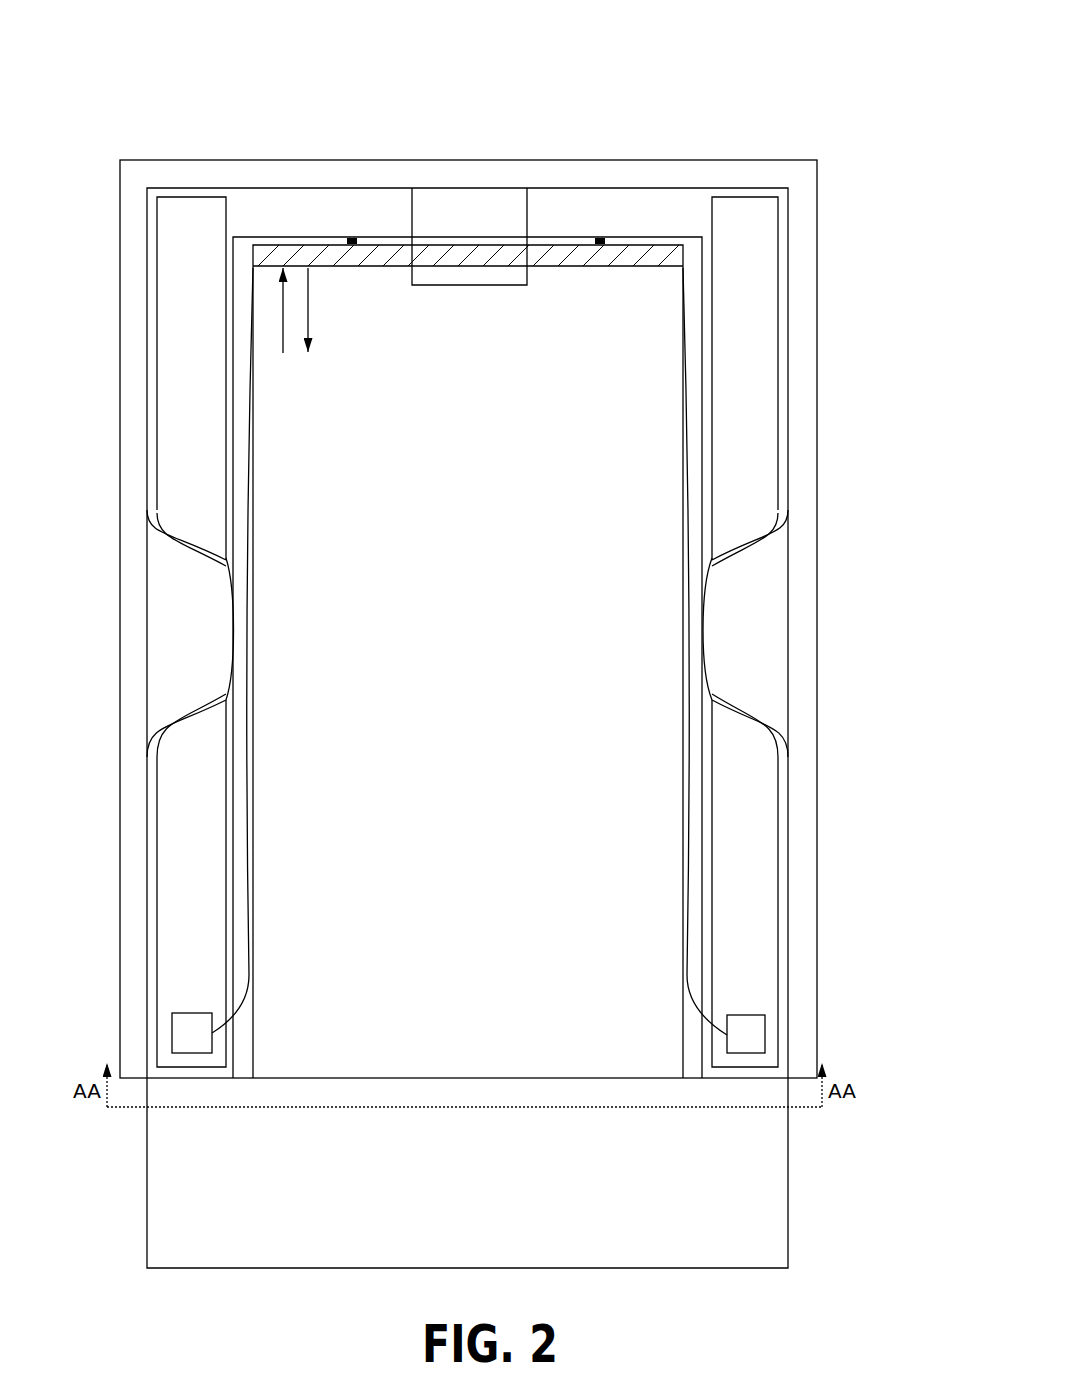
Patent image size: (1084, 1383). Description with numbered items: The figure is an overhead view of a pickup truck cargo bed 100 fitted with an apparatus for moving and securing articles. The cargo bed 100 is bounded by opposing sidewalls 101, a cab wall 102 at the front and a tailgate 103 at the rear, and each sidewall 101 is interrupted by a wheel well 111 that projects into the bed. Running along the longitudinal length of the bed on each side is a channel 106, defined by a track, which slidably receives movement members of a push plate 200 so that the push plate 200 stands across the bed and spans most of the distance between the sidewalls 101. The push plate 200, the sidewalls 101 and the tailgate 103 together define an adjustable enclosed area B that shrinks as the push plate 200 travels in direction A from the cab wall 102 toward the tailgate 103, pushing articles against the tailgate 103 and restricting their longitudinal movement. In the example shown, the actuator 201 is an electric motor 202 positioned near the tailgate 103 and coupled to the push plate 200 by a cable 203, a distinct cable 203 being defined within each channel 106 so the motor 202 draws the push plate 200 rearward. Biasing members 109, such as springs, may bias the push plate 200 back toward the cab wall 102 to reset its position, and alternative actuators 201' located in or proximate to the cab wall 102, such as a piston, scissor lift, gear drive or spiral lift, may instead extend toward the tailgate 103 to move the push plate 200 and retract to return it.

The pickup truck cargo bed 100 is at (162, 127).
The opposing sidewalls 101 is at (817, 212).
The cab wall 102 is at (623, 217).
The tailgate 103 is at (732, 1172).
The channel 106 is at (743, 235).
The biasing members 109 is at (350, 238).
The wheel well 111 is at (733, 637).
The push plate 200 is at (355, 268).
The actuator 201 is at (840, 1004).
The actuators 201' is at (686, 276).
The electric motor 202 is at (757, 1037).
The cable 203 is at (245, 825).